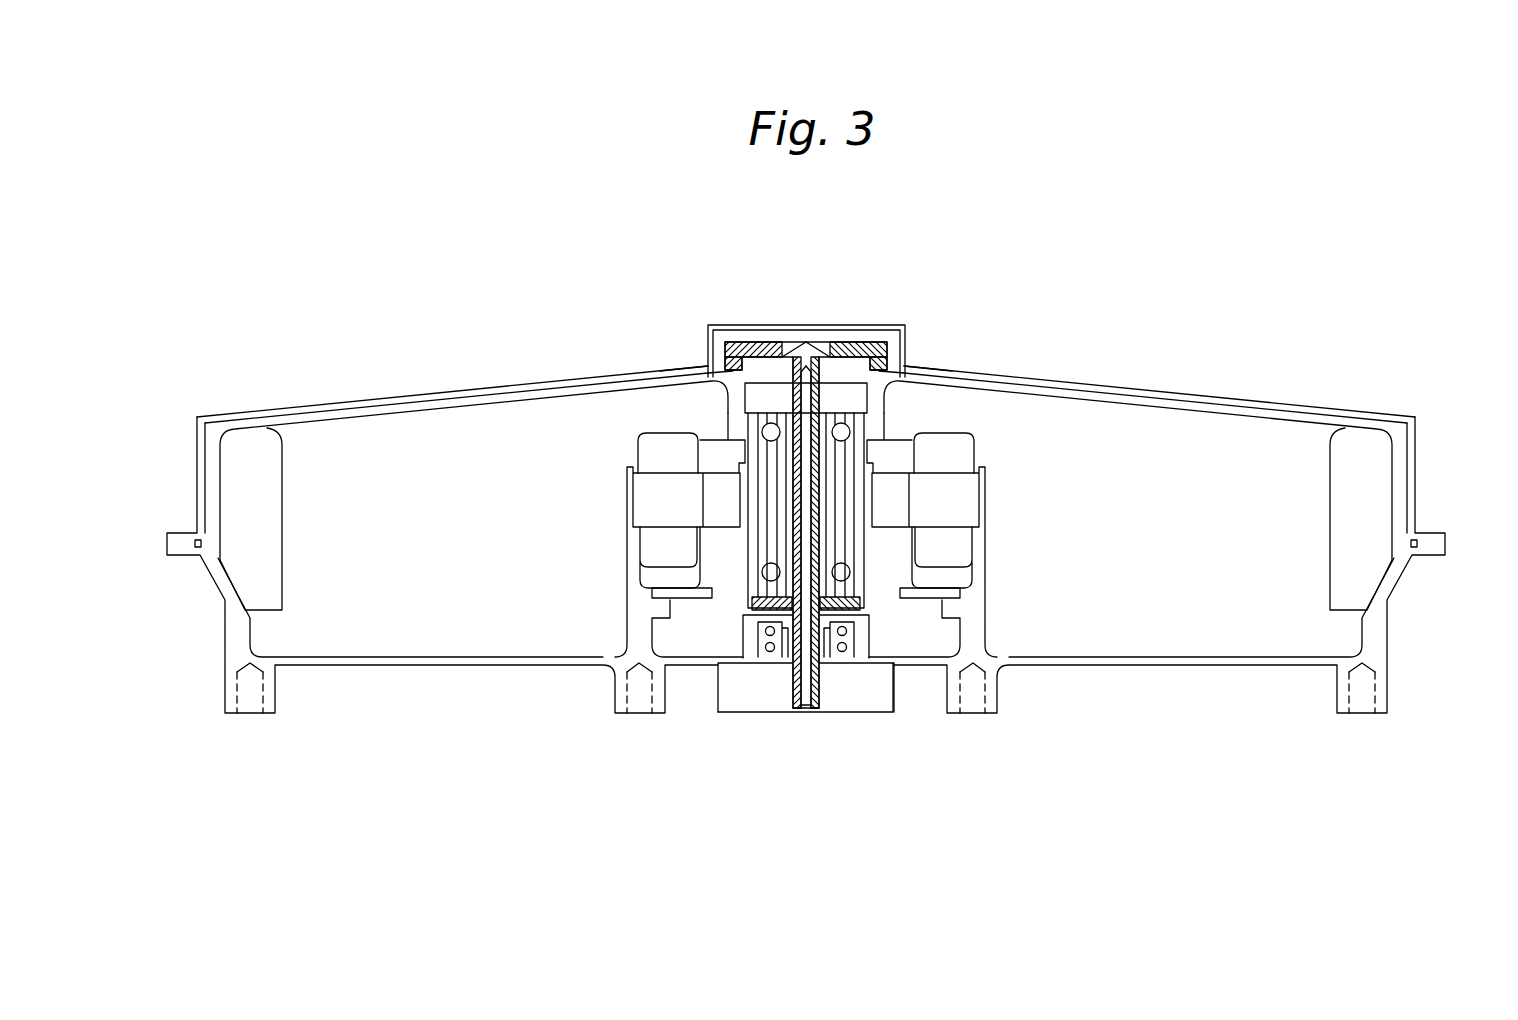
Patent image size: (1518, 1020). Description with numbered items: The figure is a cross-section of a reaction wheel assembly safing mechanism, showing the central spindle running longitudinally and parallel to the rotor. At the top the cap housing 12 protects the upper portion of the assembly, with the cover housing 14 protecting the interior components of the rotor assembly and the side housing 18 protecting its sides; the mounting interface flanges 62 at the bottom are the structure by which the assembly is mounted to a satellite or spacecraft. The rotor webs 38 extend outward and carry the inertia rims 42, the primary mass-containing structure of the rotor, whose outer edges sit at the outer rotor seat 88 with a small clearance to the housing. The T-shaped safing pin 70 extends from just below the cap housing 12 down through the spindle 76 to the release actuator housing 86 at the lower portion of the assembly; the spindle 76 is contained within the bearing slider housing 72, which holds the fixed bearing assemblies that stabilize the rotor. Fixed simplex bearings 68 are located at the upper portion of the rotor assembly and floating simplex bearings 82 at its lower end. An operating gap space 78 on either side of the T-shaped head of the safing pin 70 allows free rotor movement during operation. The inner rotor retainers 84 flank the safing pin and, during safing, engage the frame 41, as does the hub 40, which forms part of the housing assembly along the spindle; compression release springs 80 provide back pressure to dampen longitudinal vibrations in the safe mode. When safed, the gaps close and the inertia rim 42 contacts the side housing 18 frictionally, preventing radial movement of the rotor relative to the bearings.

The cap housing 12 is at (715, 323).
The cover housing 14 is at (488, 388).
The side housing 18 is at (197, 500).
The rotor webs 38 is at (410, 400).
The hub 40 is at (722, 605).
The frame 41 is at (748, 653).
The inertia rims 42 is at (255, 438).
The mounting interface flanges 62 is at (620, 714).
The fixed simplex bearings 68 is at (765, 436).
The safing pin 70 is at (893, 340).
The bearing slider housing 72 is at (840, 345).
The spindle 76 is at (790, 345).
The operating gap space 78 is at (700, 373).
The compression release springs 80 is at (765, 656).
The floating simplex bearings 82 is at (770, 575).
The inner rotor retainers 84 is at (740, 620).
The release actuator housing 86 is at (832, 703).
The outer rotor seat 88 is at (240, 580).